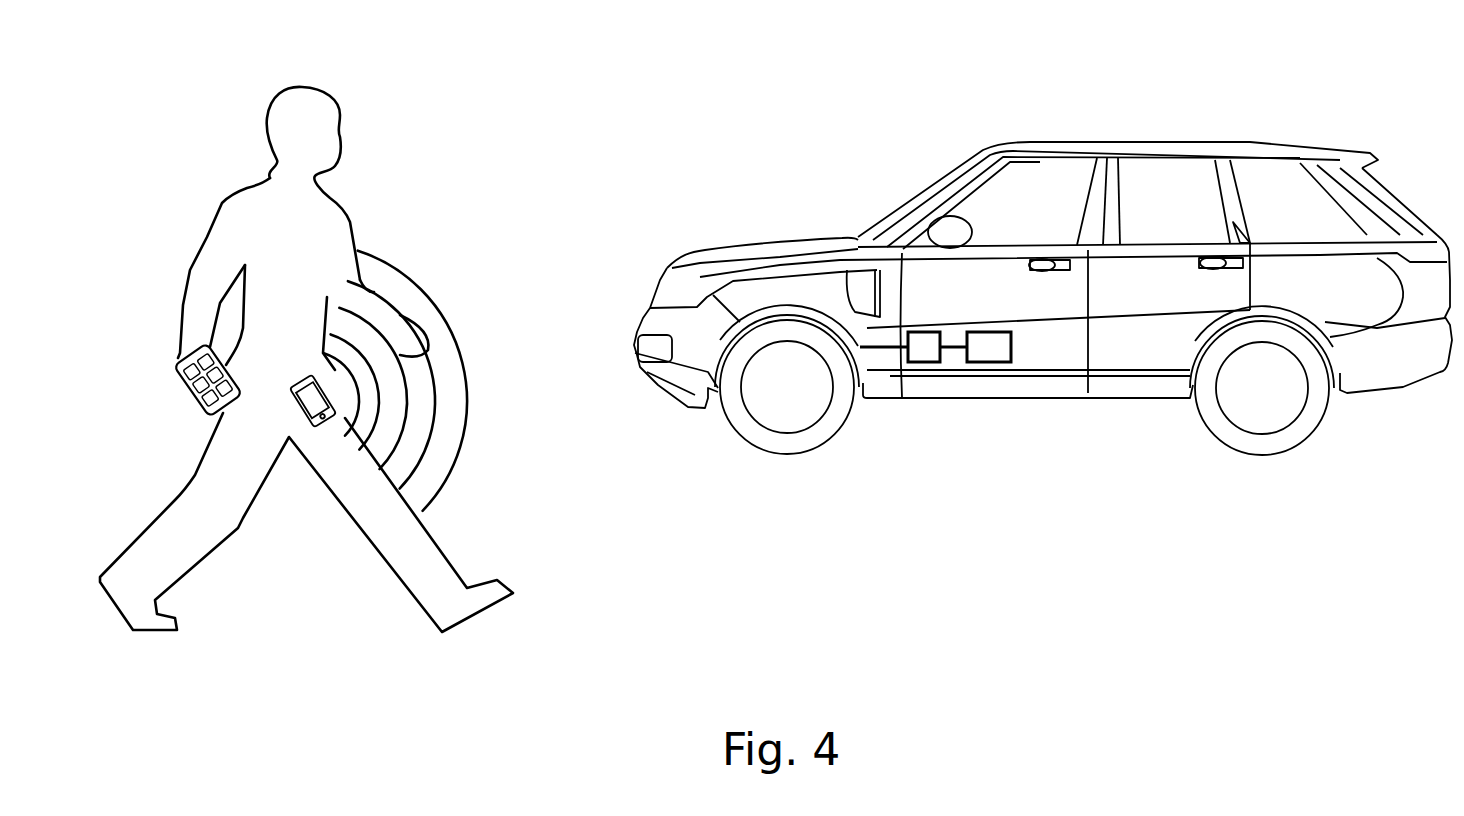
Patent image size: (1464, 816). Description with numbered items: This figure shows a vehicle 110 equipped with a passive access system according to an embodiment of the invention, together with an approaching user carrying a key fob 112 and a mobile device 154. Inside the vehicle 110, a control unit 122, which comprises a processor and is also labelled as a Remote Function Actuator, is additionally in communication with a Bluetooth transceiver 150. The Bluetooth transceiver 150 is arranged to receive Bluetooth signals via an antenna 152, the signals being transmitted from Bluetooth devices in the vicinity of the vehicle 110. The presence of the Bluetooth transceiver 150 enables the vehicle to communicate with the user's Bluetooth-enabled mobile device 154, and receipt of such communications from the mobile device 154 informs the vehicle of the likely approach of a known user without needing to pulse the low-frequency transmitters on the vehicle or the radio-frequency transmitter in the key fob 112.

The vehicle 110 is at (1108, 141).
The key fob 112 is at (173, 368).
The control unit 122 is at (988, 351).
The Bluetooth transceiver 150 is at (925, 353).
The antenna 152 is at (859, 333).
The mobile device 154 is at (288, 400).